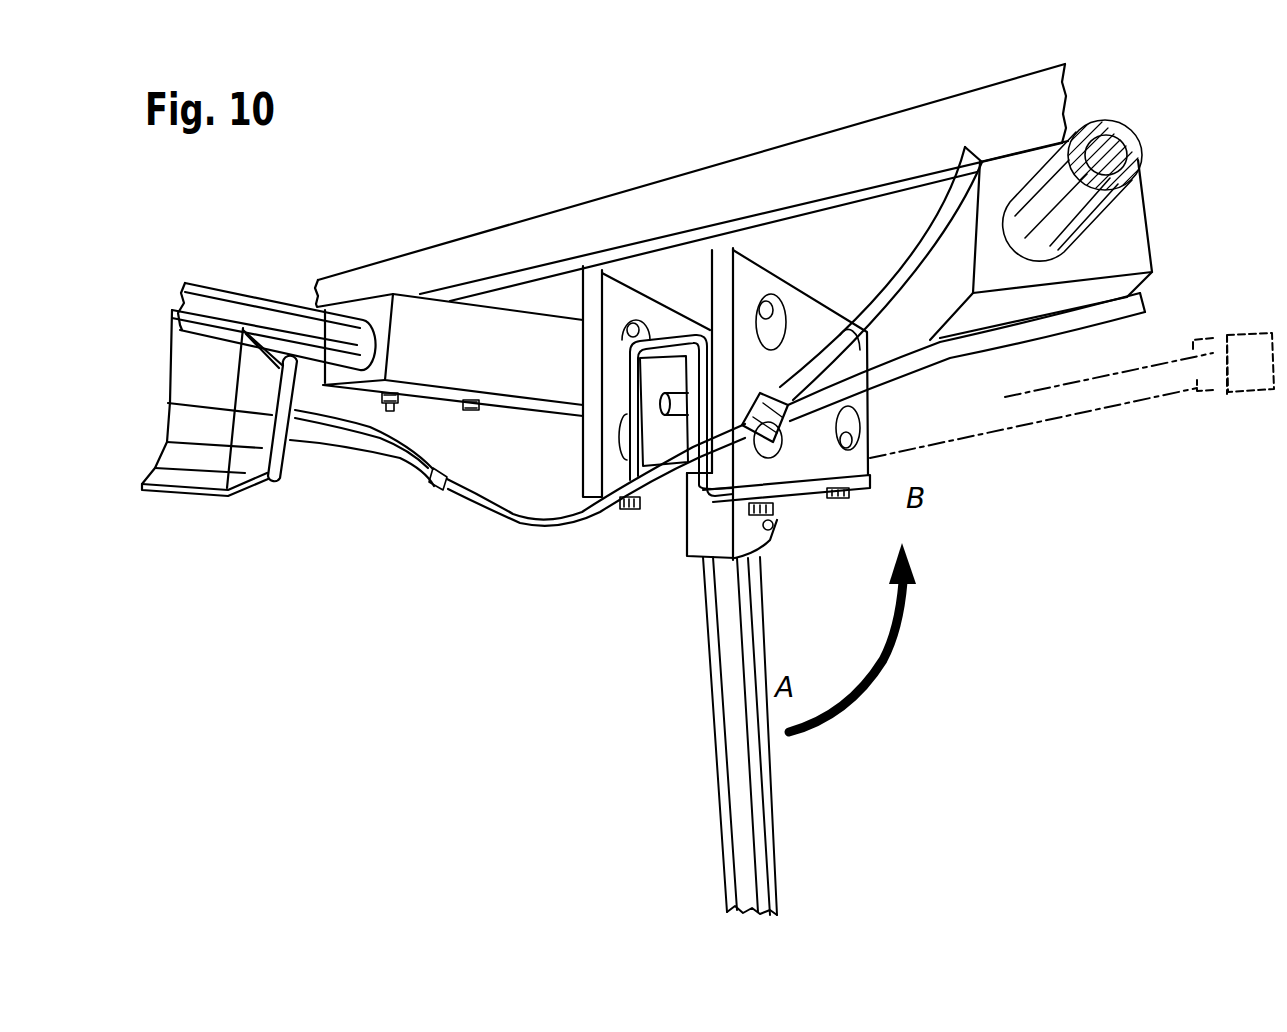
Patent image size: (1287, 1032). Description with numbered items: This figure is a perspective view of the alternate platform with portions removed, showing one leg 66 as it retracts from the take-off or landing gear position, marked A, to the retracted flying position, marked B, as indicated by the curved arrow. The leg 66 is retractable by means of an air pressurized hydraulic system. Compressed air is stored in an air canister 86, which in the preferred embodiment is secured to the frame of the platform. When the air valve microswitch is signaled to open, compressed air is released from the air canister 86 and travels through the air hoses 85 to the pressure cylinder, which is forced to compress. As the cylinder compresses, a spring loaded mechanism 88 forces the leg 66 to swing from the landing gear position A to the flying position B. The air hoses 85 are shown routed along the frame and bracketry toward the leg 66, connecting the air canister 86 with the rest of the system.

The leg 66 is at (1130, 400).
The air hose 85 is at (972, 150).
The air canister 86 is at (203, 462).
The spring loaded mechanism 88 is at (668, 332).